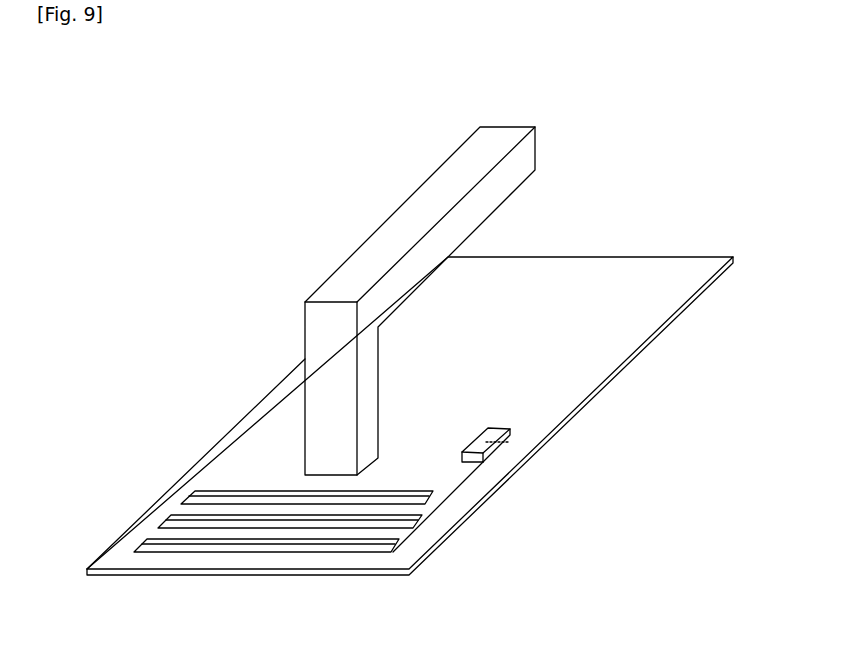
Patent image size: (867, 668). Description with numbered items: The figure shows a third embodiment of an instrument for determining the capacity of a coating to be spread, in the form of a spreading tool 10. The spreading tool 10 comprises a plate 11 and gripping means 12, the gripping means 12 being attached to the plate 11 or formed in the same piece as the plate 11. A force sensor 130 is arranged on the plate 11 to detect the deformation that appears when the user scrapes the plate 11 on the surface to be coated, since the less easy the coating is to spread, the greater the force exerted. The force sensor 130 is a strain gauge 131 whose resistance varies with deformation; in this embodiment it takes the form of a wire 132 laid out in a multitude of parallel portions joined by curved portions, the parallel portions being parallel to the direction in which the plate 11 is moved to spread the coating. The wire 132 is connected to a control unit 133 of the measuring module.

The spreading tool 10 is at (367, 192).
The plate 11 is at (602, 252).
The gripping means 12 is at (502, 126).
The force sensor 130 is at (242, 480).
The strain gauge 131 is at (502, 424).
The wire 132 is at (307, 553).
The control unit 133 is at (506, 442).